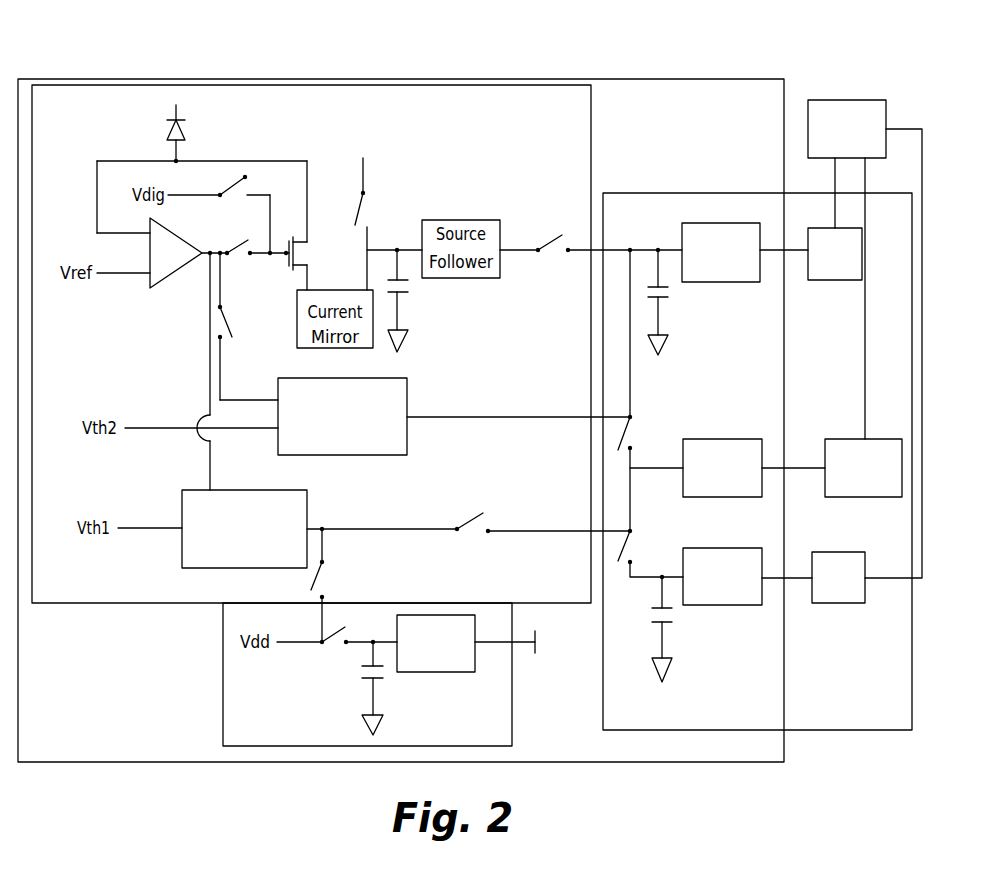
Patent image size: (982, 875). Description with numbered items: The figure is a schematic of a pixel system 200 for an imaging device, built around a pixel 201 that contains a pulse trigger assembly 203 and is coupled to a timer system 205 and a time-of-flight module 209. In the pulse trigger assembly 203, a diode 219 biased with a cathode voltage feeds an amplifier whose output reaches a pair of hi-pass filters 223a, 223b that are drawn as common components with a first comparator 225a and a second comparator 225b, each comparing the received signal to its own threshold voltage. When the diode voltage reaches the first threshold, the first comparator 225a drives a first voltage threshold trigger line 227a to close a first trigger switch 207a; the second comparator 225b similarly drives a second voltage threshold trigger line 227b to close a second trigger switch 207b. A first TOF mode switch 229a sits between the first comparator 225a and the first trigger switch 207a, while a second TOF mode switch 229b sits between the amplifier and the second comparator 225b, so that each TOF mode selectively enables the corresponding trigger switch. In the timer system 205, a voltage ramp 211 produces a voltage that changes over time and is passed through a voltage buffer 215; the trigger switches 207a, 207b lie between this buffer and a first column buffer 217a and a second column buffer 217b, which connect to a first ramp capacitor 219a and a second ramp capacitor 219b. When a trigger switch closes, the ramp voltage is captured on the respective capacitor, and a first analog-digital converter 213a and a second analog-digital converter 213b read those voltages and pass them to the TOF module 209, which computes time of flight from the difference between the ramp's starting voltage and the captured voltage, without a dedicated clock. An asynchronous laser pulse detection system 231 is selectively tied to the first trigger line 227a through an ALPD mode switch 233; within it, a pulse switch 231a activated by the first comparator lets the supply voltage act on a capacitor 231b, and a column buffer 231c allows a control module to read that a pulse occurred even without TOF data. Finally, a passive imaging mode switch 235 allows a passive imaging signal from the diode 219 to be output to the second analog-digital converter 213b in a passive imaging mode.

The pixel system 200 is at (93, 35).
The pixel 201 is at (738, 121).
The pulse trigger assembly 203 is at (81, 126).
The timer system 205 is at (905, 226).
The first trigger switch 207a is at (633, 552).
The second trigger switch 207b is at (633, 440).
The time-of-flight module 209 is at (862, 140).
The voltage ramp 211 is at (853, 438).
The first analog-digital converter 213a is at (845, 605).
The second analog-digital converter 213b is at (837, 283).
The voltage buffer 215 is at (755, 438).
The first column buffer 217a is at (755, 547).
The second column buffer 217b is at (752, 222).
The diode 219 is at (186, 129).
The first ramp capacitor 219a is at (665, 625).
The second ramp capacitor 219b is at (661, 300).
The first hi-pass filter 223a is at (287, 514).
The second hi-pass filter 223b is at (386, 403).
The first comparator 225a is at (342, 486).
The second comparator 225b is at (447, 378).
The first voltage threshold trigger line 227a is at (551, 529).
The second voltage threshold trigger line 227b is at (541, 415).
The first TOF mode switch 229a is at (458, 524).
The second TOF mode switch 229b is at (224, 316).
The asynchronous laser pulse detection system 231 is at (222, 699).
The pulse switch 231a is at (327, 650).
The capacitor 231b is at (377, 685).
The column buffer 231c is at (455, 673).
The ALPD mode switch 233 is at (448, 178).
The passive imaging mode switch 235 is at (557, 233).